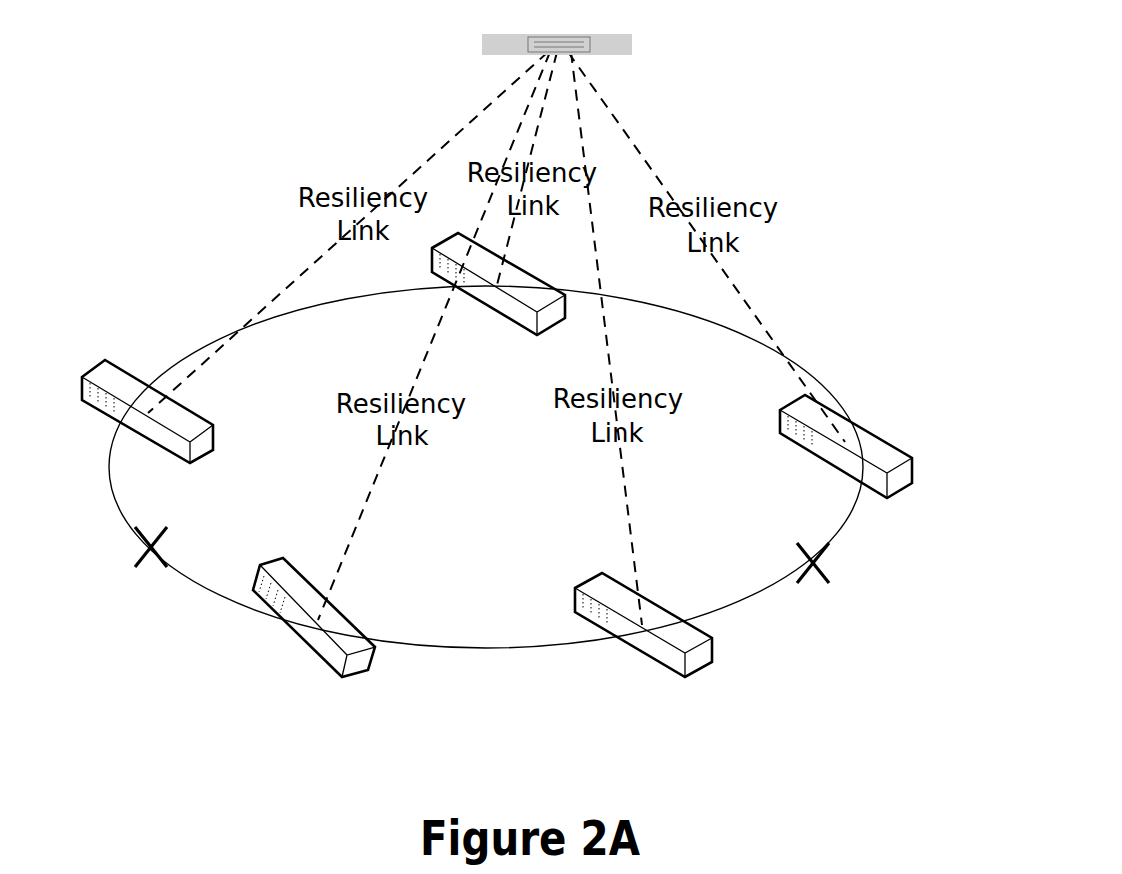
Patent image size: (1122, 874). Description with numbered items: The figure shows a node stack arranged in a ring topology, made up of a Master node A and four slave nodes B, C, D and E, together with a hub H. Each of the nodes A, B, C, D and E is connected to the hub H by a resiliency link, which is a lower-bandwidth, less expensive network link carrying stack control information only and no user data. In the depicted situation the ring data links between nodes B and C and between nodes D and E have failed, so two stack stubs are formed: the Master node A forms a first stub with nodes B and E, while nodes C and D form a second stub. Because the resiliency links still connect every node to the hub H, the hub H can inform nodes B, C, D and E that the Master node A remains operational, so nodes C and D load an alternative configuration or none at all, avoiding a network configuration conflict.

The hub H is at (788, 22).
The Master node A is at (502, 277).
The slave node B is at (859, 440).
The slave node C is at (643, 613).
The slave node D is at (331, 615).
The slave node E is at (177, 411).